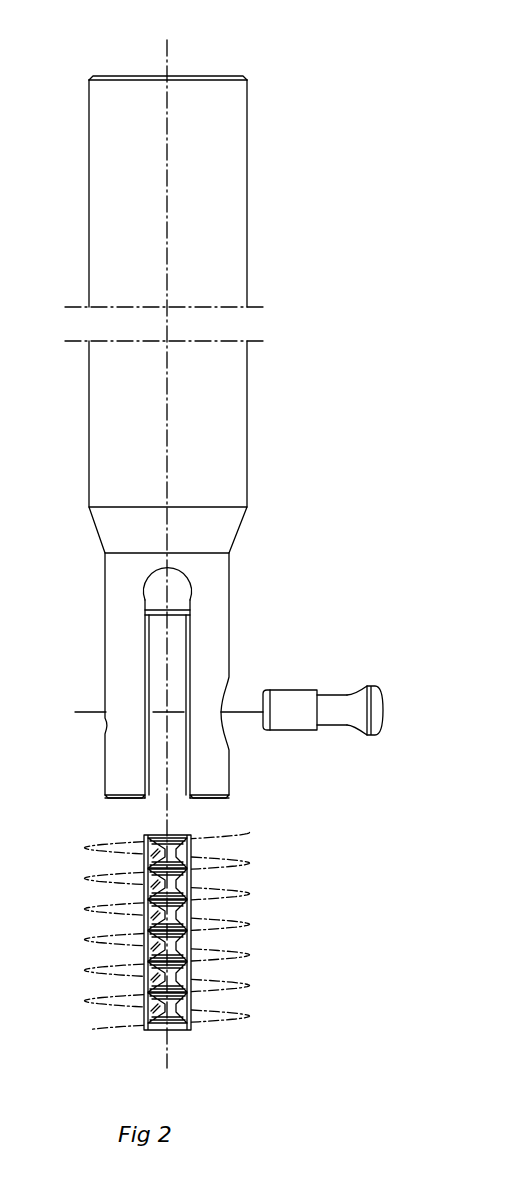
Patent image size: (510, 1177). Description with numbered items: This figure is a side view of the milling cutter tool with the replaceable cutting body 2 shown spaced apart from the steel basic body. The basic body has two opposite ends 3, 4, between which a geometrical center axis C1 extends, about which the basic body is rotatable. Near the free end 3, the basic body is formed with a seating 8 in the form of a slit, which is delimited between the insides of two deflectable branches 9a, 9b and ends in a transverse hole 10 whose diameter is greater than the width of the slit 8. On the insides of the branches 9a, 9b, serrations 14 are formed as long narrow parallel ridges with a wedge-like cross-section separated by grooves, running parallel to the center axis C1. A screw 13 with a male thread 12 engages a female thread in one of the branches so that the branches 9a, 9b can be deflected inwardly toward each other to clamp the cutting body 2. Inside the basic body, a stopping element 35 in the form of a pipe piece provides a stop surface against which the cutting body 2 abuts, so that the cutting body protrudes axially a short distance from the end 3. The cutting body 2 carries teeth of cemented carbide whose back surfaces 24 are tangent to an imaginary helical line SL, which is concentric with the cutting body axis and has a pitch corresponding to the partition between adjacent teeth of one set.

The end 4 is at (118, 76).
The center axis C1 is at (170, 58).
The transverse hole 10 is at (181, 588).
The stopping element 35 is at (153, 617).
The serrations 14 is at (186, 657).
The seating 8 is at (156, 661).
The branch 9b is at (118, 768).
The branch 9a is at (215, 768).
The end 3 is at (122, 799).
The male thread 12 is at (295, 700).
The screw 13 is at (325, 748).
The back surface 24 is at (192, 858).
The helical line SL is at (252, 920).
The cutting body 2 is at (210, 1048).